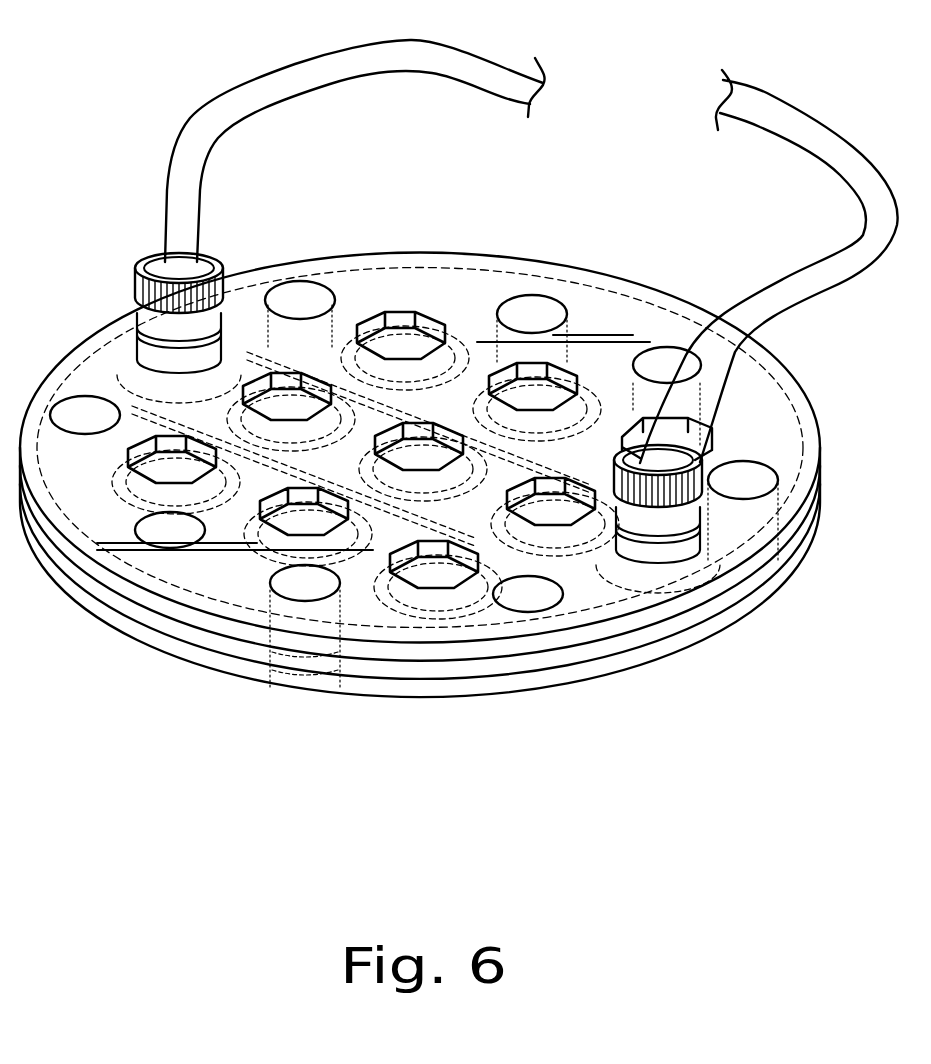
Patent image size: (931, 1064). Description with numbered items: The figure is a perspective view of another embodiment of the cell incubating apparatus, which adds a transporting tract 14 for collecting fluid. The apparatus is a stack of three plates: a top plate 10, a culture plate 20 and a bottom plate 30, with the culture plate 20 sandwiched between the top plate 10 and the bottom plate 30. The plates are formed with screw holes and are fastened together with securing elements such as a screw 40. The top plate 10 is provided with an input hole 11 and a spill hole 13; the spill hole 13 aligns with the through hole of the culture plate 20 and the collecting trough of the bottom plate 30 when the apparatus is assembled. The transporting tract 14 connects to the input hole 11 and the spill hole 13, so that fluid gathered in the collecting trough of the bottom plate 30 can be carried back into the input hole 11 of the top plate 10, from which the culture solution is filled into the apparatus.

The top plate 10 is at (693, 600).
The culture plate 20 is at (630, 637).
The bottom plate 30 is at (555, 677).
The screw 40 is at (312, 627).
The input hole 11 is at (147, 340).
The spill hole 13 is at (687, 540).
The transporting tract 14 is at (793, 112).